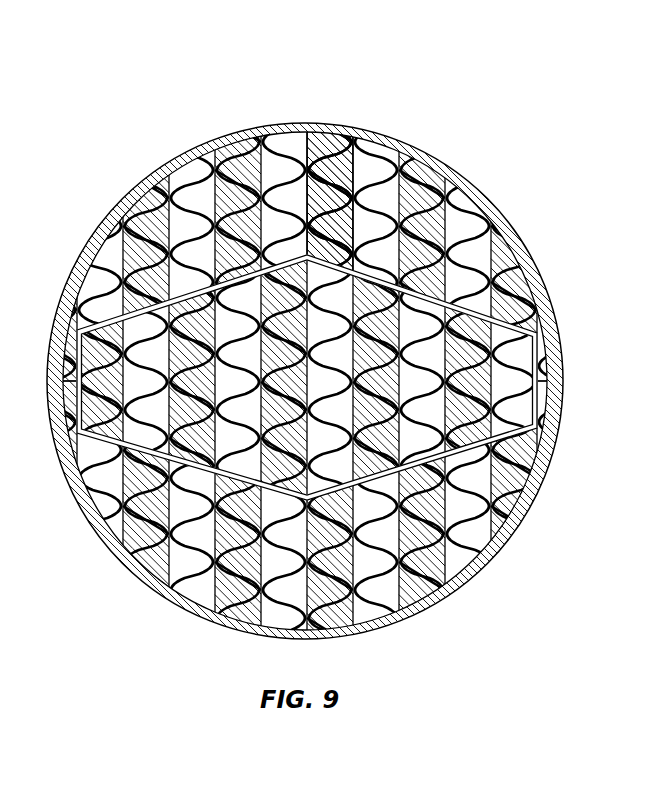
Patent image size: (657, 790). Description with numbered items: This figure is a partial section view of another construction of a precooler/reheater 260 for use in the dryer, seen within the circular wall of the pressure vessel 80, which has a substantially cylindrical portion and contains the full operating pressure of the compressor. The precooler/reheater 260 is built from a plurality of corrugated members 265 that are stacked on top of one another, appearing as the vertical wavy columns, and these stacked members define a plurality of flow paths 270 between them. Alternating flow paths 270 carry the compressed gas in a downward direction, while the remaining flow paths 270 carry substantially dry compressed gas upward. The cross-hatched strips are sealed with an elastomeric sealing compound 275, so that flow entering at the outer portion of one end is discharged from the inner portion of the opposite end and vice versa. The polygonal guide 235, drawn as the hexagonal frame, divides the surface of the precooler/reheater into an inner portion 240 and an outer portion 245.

The precooler/reheater 260 is at (328, 395).
The flow paths 270 is at (305, 360).
The pressure vessel 80 is at (438, 604).
The corrugated members 265 is at (275, 146).
The elastomeric sealing compound 275 is at (338, 155).
The polygonal guide 235 is at (465, 313).
The inner portion 240 is at (513, 377).
The outer portion 245 is at (472, 510).